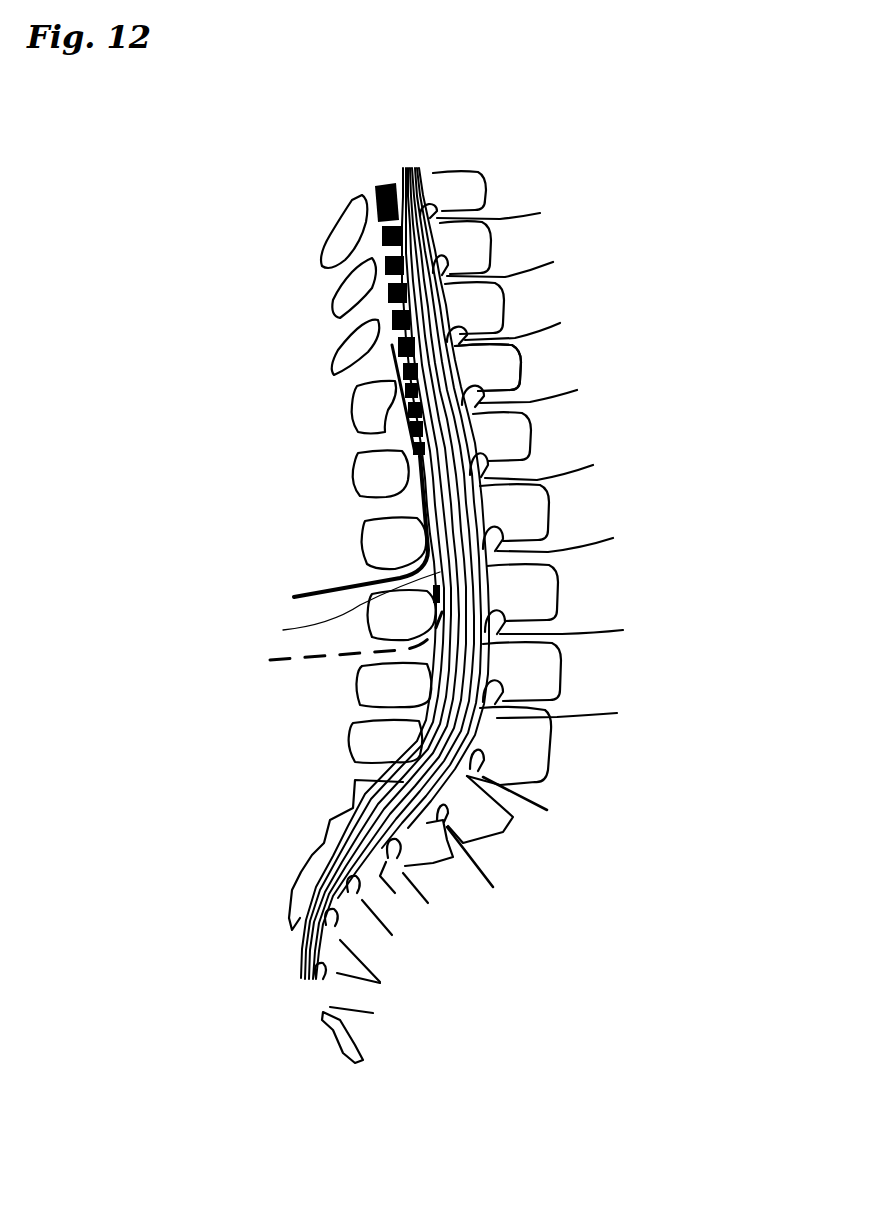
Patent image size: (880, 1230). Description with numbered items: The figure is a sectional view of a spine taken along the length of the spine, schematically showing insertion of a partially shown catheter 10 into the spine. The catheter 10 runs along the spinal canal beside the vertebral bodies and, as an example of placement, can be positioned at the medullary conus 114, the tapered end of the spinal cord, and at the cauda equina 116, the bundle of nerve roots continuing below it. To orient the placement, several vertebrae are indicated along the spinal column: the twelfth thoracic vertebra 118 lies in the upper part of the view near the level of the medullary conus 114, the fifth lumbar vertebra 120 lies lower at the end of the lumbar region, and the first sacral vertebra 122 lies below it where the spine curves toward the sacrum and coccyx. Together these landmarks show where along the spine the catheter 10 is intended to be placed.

The catheter 10 is at (318, 585).
The medullary conus 114 is at (396, 457).
The cauda equina 116 is at (330, 609).
The 12th thoracic vertebra 118 is at (493, 372).
The 5th lumbar vertebra 120 is at (527, 756).
The 1st sacral vertebra 122 is at (477, 827).